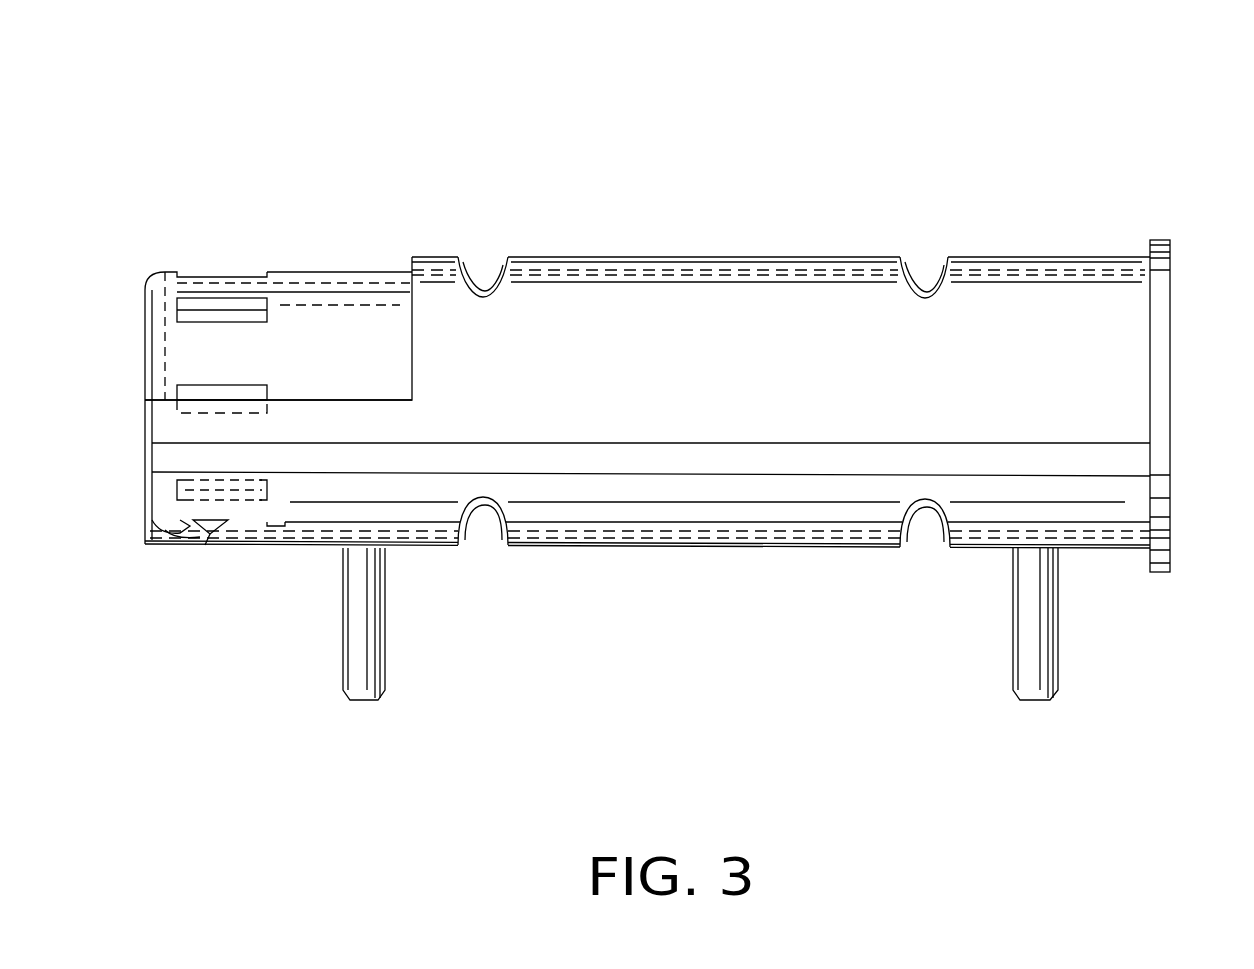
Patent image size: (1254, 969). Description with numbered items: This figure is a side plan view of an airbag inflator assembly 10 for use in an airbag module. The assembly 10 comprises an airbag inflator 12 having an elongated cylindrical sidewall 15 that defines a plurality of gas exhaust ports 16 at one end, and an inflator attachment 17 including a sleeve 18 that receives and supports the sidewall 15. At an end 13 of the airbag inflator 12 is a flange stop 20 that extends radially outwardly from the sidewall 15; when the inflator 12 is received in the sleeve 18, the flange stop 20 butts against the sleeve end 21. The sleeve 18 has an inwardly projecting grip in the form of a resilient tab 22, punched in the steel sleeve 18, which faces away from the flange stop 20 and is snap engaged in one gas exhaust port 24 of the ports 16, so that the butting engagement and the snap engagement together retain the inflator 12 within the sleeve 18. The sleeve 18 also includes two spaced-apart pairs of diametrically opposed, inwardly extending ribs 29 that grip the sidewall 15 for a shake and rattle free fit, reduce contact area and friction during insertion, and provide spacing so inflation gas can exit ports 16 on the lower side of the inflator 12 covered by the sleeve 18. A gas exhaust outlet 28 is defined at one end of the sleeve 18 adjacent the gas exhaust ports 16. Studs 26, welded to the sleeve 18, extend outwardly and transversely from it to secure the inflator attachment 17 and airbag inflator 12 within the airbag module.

The airbag inflator assembly 10 is at (752, 126).
The airbag inflator 12 is at (388, 272).
The end 13 is at (1173, 318).
The sidewall 15 is at (340, 272).
The gas exhaust ports 16 is at (268, 387).
The inflator attachment 17 is at (642, 258).
The sleeve 18 is at (768, 256).
The flange stop 20 is at (1160, 240).
The sleeve end 21 is at (1143, 478).
The resilient tab 22 is at (172, 540).
The gas exhaust port 24 is at (207, 545).
The studs 26 is at (385, 645).
The gas exhaust outlet 28 is at (160, 400).
The ribs 29 is at (490, 300).